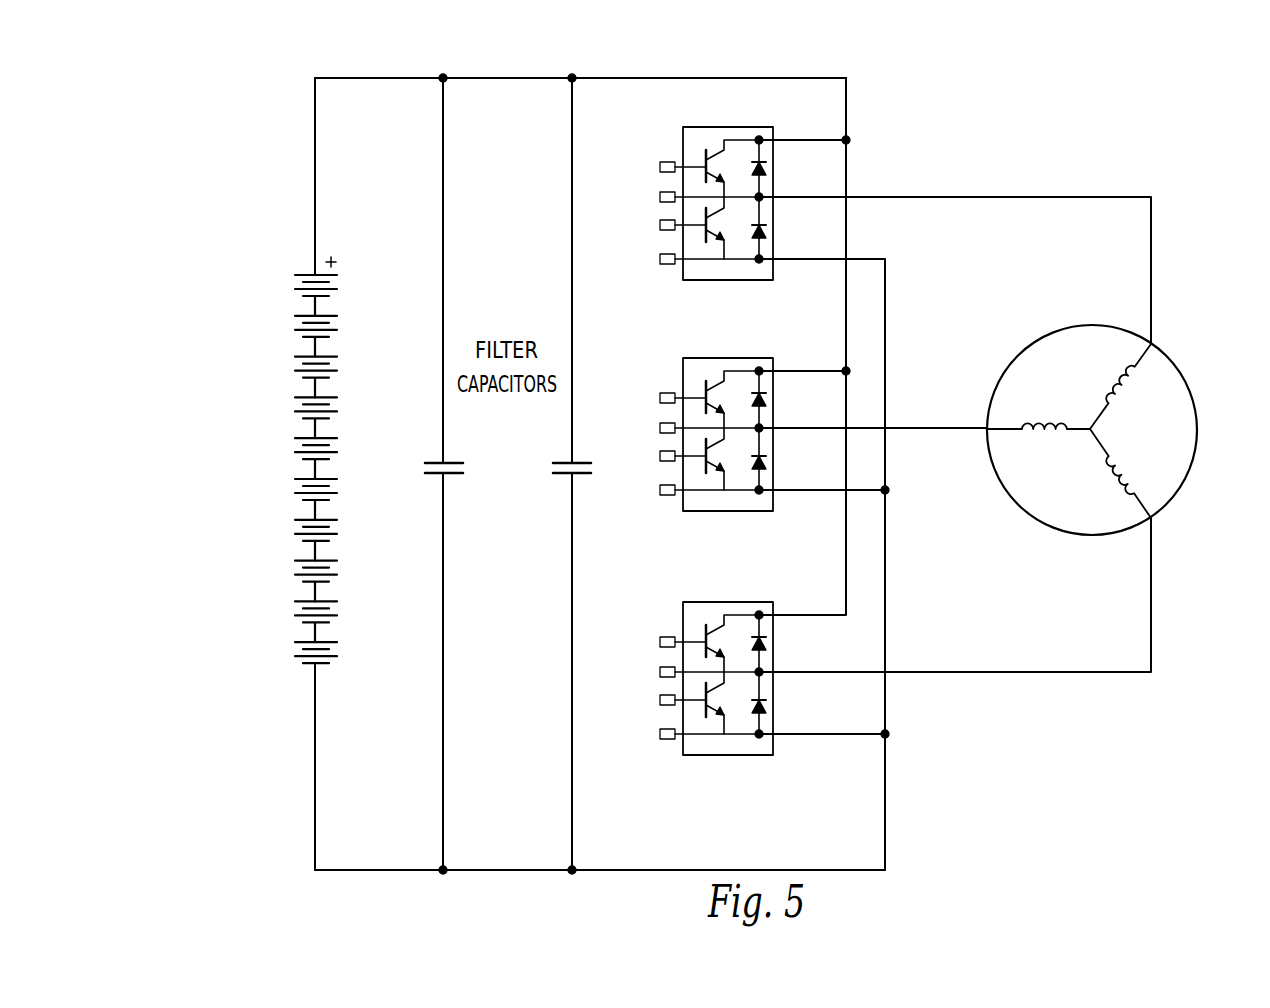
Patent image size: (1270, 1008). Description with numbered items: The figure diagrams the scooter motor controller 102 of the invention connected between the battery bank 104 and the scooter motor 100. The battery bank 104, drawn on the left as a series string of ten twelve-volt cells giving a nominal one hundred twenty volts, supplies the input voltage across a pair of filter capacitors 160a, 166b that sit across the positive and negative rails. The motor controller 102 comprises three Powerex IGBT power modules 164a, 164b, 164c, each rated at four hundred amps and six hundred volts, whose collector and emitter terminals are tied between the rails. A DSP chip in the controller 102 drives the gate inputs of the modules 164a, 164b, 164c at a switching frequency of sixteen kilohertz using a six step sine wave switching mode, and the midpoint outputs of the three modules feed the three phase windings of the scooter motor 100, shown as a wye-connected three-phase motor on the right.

The scooter motor 100 is at (1192, 390).
The scooter motor controller 102 is at (872, 106).
The battery bank 104 is at (282, 317).
The filter capacitor 160a is at (441, 462).
The filter capacitor 166b is at (568, 462).
The IGBT power module 164a is at (716, 127).
The IGBT power module 164b is at (683, 364).
The IGBT power module 164c is at (702, 602).